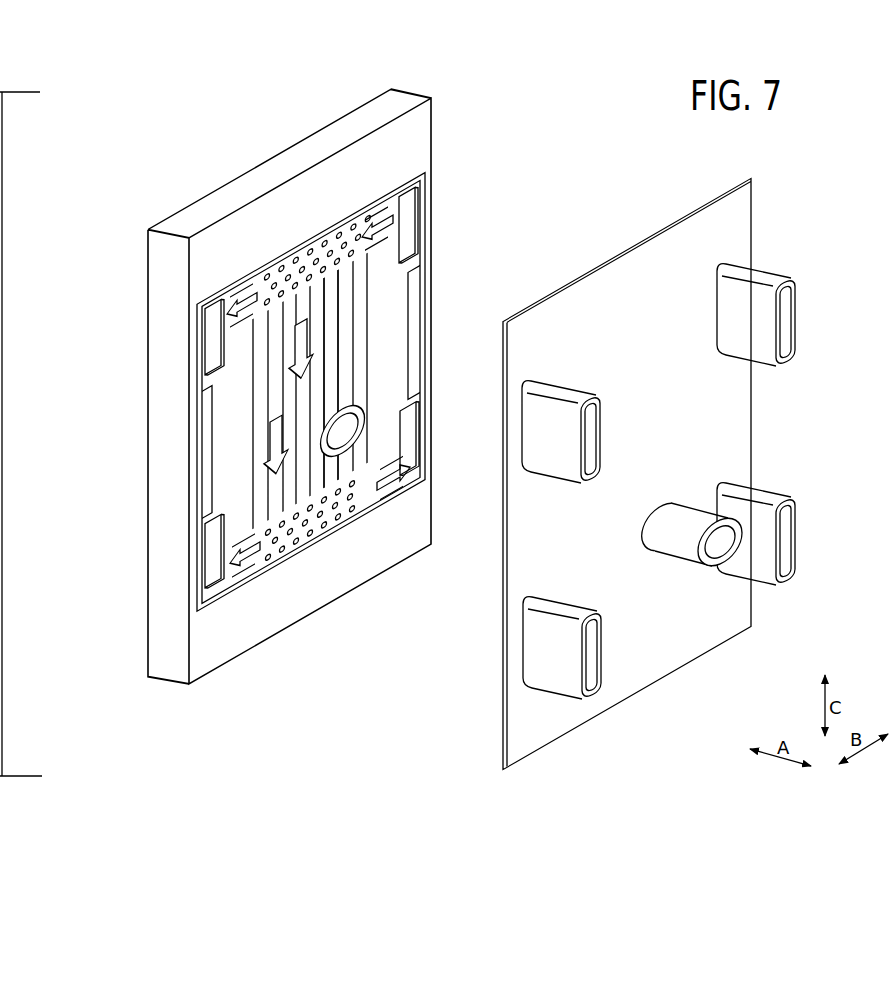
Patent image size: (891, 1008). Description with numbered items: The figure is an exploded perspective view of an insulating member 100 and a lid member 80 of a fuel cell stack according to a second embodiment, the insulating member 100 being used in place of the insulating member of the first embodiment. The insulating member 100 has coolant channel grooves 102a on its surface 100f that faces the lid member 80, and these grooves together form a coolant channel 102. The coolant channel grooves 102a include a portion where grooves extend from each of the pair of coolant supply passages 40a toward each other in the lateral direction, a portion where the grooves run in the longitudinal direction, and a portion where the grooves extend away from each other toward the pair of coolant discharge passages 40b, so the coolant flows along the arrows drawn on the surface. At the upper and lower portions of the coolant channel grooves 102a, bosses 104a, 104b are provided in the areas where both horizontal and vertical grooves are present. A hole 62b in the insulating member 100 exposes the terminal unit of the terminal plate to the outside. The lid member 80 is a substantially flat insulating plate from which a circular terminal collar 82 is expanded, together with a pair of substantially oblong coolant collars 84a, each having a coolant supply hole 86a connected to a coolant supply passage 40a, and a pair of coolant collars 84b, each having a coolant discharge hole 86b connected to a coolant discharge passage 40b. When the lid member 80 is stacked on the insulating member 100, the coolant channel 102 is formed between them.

The insulating member 100 is at (295, 419).
The surface 100f is at (263, 622).
The coolant channel 102 is at (346, 371).
The coolant channel grooves 102a is at (330, 366).
The boss 104a is at (291, 278).
The boss 104b is at (332, 512).
The coolant supply passages 40a is at (403, 224).
The coolant discharge passages 40b is at (408, 443).
The hole 62b is at (343, 433).
The lid member 80 is at (756, 181).
The terminal collar 82 is at (679, 513).
The coolant collars 84a is at (699, 355).
The coolant supply hole 86a is at (590, 441).
The coolant collars 84b is at (699, 573).
The coolant discharge hole 86b is at (593, 661).